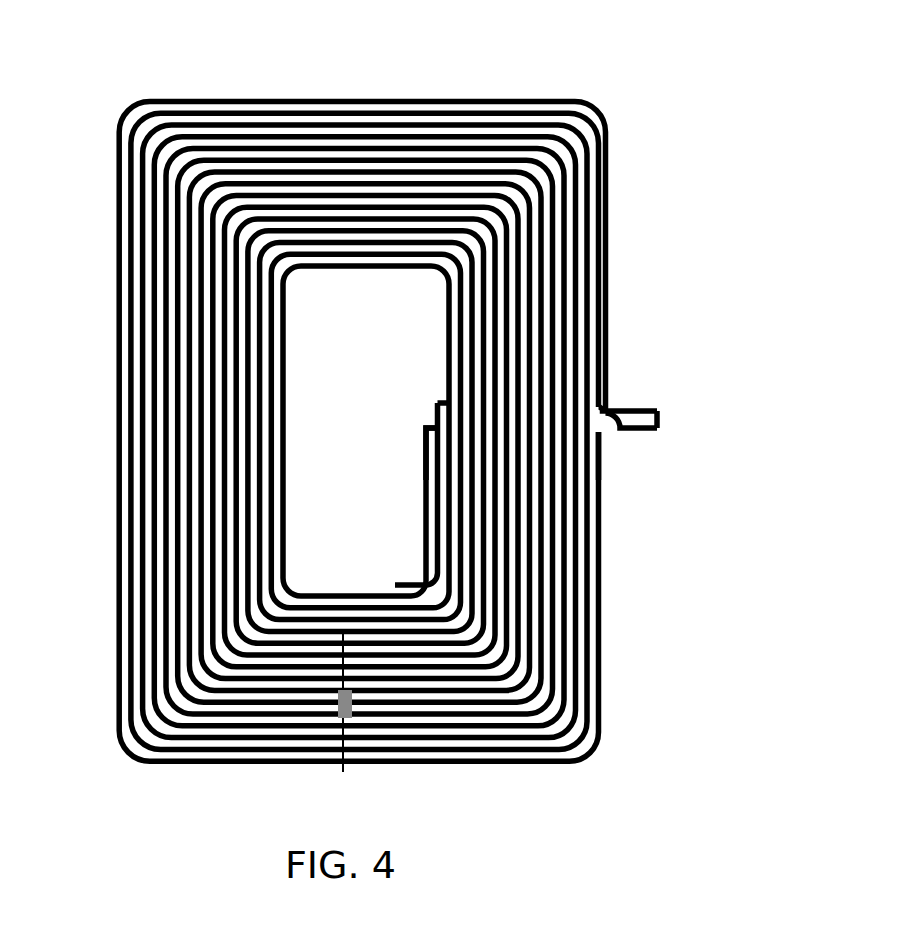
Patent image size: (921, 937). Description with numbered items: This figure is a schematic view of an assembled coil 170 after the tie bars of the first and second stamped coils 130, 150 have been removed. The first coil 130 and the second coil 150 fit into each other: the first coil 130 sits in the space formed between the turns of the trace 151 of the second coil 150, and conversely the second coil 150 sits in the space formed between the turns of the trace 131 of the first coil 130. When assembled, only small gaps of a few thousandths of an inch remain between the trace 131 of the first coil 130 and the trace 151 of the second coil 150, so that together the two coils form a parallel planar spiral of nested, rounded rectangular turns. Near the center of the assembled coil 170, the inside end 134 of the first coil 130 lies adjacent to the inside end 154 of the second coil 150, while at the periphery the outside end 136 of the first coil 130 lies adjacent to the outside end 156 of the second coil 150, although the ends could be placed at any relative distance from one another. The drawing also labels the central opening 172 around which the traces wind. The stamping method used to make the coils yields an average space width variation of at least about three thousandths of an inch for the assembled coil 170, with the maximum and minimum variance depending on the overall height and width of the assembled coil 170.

The assembled coil 170 is at (496, 404).
The first coil 130 is at (444, 432).
The trace of the first coil 131 is at (545, 626).
The inside end of the first coil 134 is at (437, 400).
The outside end of the first coil 136 is at (672, 415).
The second coil 150 is at (414, 431).
The trace of the second coil 151 is at (545, 200).
The inside end of the second coil 154 is at (424, 428).
The outside end of the second coil 156 is at (602, 455).
The opening 172 is at (323, 298).